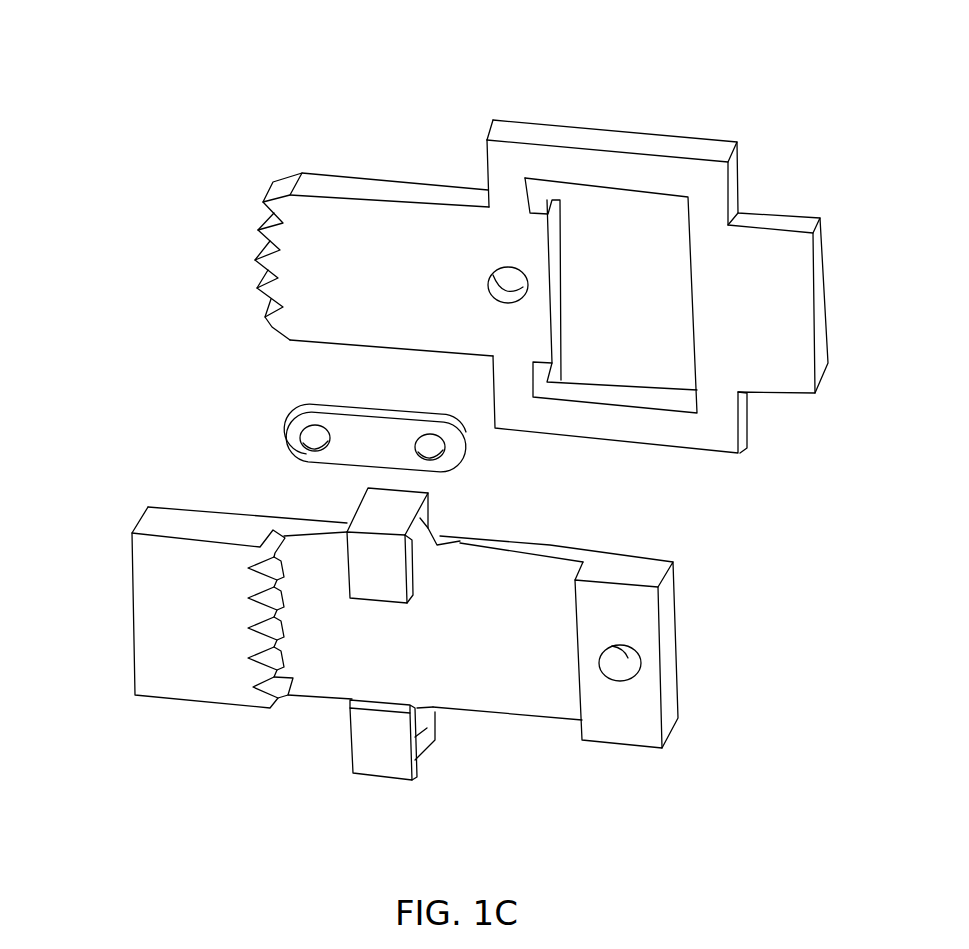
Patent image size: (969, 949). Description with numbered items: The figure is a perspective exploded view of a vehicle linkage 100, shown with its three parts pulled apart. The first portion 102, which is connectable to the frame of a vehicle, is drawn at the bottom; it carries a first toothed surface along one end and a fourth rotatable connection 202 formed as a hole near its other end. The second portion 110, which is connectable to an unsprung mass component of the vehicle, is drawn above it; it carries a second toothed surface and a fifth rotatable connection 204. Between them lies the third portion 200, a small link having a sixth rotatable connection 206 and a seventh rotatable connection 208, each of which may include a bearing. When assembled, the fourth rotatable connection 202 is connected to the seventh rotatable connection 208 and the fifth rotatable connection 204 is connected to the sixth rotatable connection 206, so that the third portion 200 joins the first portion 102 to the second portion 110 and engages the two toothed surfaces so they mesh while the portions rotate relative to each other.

The linkage 100 is at (271, 394).
The second portion 110 is at (693, 177).
The first portion 102 is at (185, 568).
The third portion 200 is at (403, 462).
The fourth rotatable connection 202 is at (618, 667).
The fifth rotatable connection 204 is at (498, 290).
The sixth rotatable connection 206 is at (308, 442).
The seventh rotatable connection 208 is at (423, 443).